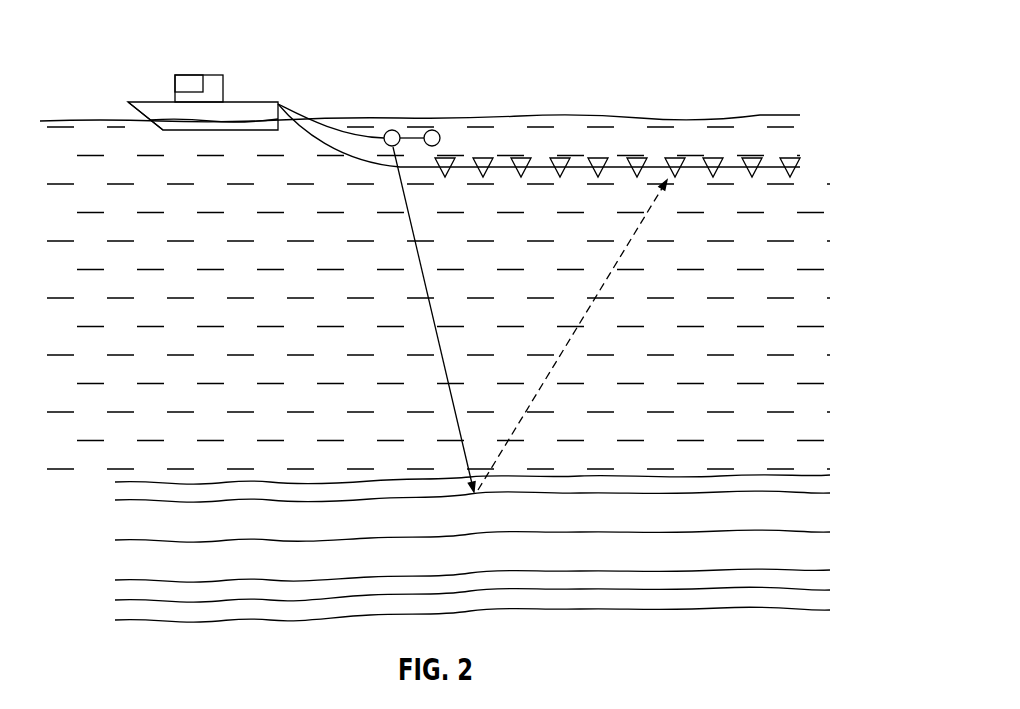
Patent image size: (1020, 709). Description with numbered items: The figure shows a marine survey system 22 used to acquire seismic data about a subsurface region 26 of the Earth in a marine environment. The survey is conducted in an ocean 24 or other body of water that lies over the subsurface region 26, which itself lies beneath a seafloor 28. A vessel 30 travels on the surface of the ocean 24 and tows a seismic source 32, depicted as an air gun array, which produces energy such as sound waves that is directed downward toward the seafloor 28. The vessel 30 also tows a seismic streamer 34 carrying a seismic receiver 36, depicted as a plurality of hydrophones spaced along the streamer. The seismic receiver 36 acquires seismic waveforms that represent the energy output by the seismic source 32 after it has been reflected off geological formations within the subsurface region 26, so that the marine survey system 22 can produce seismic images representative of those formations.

The marine survey system 22 is at (692, 42).
The ocean 24 is at (378, 347).
The subsurface region 26 is at (108, 473).
The seafloor 28 is at (258, 474).
The vessel 30 is at (210, 75).
The seismic source 32 is at (393, 129).
The seismic streamer 34 is at (812, 127).
The seismic receiver 36 is at (486, 156).